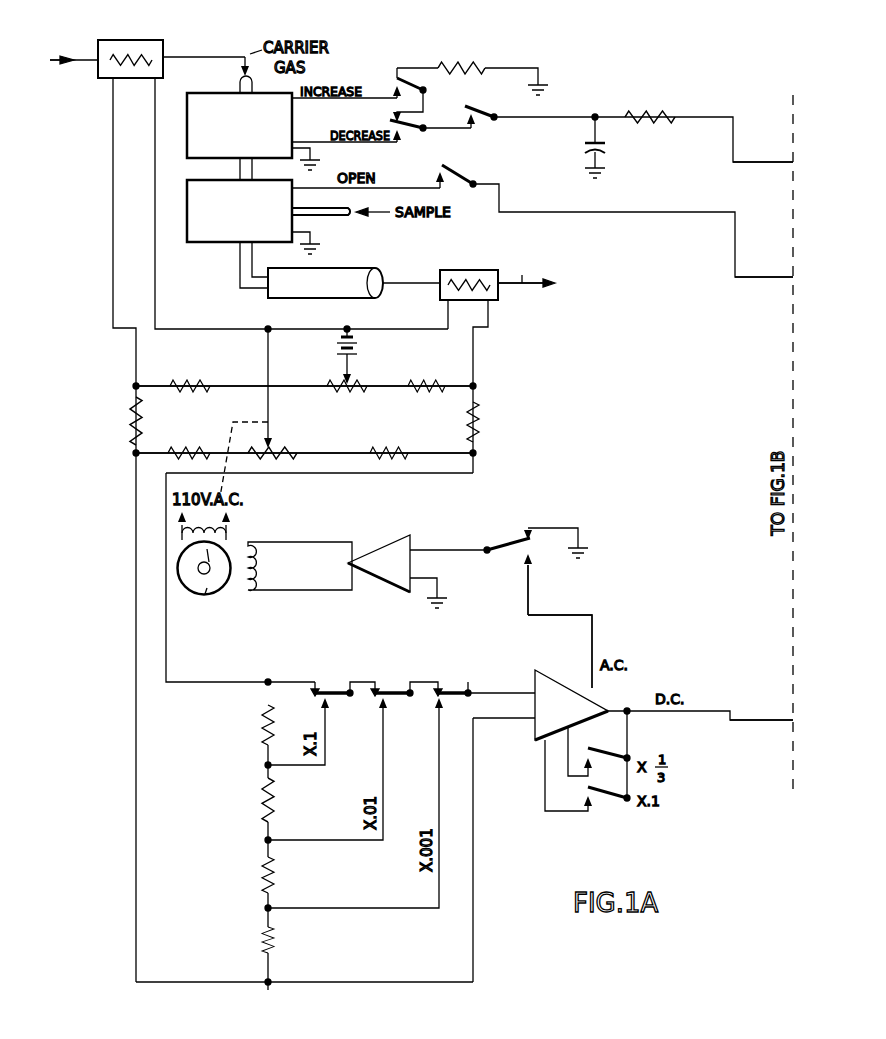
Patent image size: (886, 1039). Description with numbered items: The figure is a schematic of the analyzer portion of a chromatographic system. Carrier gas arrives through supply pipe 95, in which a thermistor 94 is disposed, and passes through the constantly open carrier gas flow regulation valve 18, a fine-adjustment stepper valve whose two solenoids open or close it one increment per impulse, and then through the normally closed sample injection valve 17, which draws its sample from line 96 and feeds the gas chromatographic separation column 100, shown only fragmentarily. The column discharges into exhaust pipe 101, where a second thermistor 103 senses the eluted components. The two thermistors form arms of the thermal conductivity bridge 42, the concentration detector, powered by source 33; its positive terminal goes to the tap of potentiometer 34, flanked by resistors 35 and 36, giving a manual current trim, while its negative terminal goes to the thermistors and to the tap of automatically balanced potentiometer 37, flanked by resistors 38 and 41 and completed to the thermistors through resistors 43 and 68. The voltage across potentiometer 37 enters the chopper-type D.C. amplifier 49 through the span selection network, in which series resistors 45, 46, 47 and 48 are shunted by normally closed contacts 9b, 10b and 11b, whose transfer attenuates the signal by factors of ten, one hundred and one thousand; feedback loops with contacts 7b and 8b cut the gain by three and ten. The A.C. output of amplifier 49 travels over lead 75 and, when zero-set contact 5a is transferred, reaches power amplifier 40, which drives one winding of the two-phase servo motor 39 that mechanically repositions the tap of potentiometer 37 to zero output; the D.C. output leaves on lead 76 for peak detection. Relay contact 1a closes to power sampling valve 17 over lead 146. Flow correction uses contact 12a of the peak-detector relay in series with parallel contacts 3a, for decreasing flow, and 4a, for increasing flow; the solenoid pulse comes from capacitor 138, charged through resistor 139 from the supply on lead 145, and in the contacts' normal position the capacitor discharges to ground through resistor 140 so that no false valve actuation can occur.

The thermistor 94 is at (98, 40).
The carrier gas supply pipe 95 is at (78, 63).
The carrier gas flow regulation valve 18 is at (292, 120).
The sample injection valve 17 is at (210, 243).
The sample line 96 is at (333, 216).
The gas chromatographic separation column 100 is at (325, 283).
The thermistor 103 is at (447, 270).
The exhaust pipe 101 is at (521, 269).
The resistor 140 is at (478, 62).
The relay contact 4a is at (380, 73).
The relay contact 3a is at (415, 130).
The relay contact 12a is at (478, 110).
The relay contact 1a is at (462, 176).
The resistor 139 is at (652, 112).
The capacitor 138 is at (590, 156).
The lead 145 is at (770, 165).
The lead 146 is at (748, 278).
The power source 33 is at (338, 343).
The resistor 35 is at (200, 380).
The potentiometer 34 is at (335, 381).
The resistor 36 is at (442, 380).
The resistor 43 is at (140, 435).
The resistor 38 is at (190, 448).
The automatically balanced potentiometer 37 is at (293, 445).
The resistor 41 is at (395, 445).
The resistor 68 is at (465, 418).
The thermal conductivity bridge 42 is at (485, 405).
The motor 39 is at (204, 584).
The power amplifier 40 is at (388, 553).
The relay contact 5a is at (505, 542).
The lead 75 is at (560, 615).
The amplifier 49 is at (532, 680).
The relay contact 9b is at (338, 690).
The relay contact 10b is at (390, 690).
The relay contact 11b is at (455, 690).
The relay contact 7b is at (609, 757).
The relay contact 8b is at (620, 797).
The lead 76 is at (749, 722).
The resistor 45 is at (262, 734).
The resistor 46 is at (262, 810).
The resistor 47 is at (262, 882).
The resistor 48 is at (260, 952).